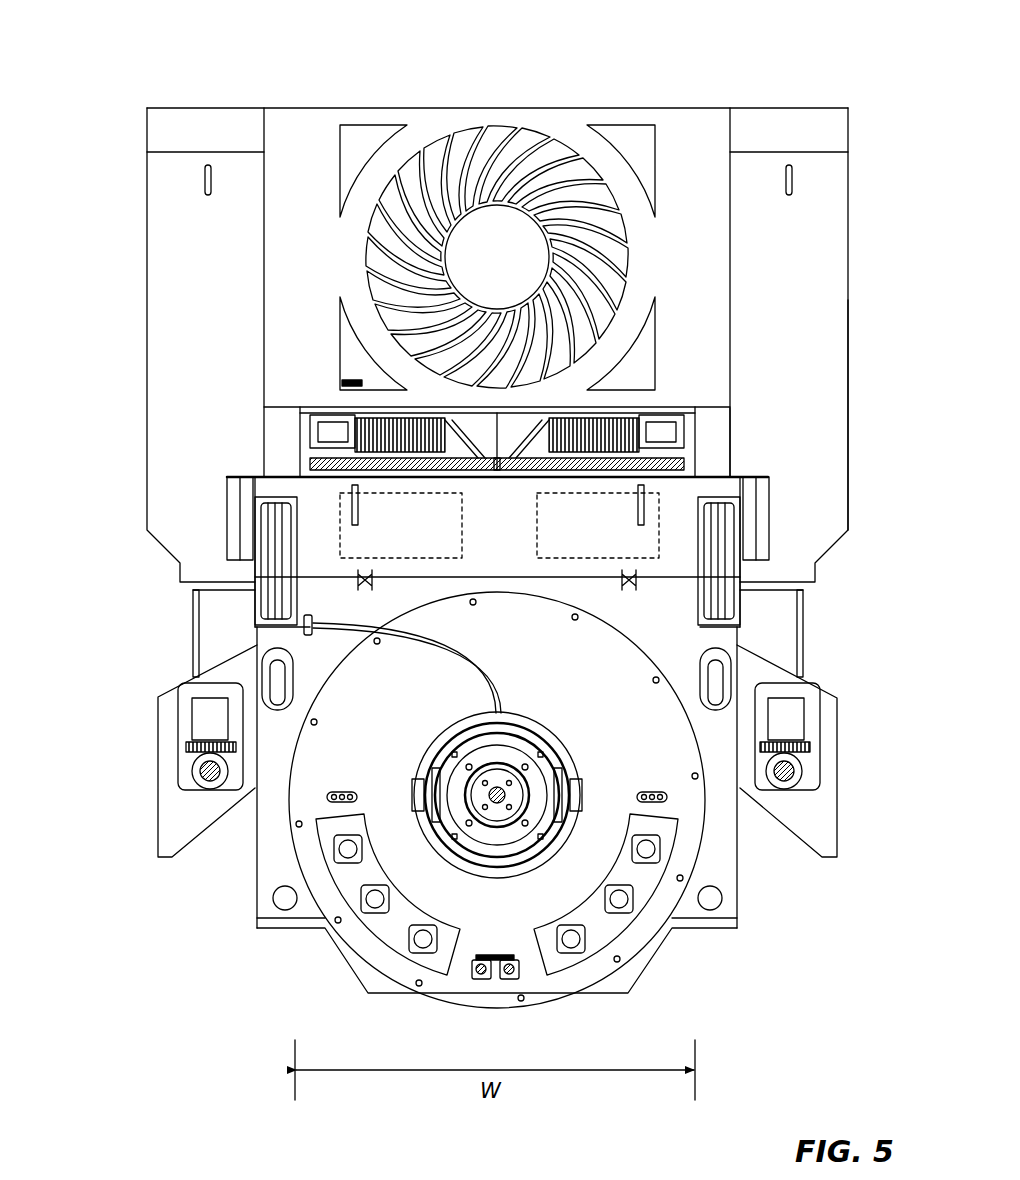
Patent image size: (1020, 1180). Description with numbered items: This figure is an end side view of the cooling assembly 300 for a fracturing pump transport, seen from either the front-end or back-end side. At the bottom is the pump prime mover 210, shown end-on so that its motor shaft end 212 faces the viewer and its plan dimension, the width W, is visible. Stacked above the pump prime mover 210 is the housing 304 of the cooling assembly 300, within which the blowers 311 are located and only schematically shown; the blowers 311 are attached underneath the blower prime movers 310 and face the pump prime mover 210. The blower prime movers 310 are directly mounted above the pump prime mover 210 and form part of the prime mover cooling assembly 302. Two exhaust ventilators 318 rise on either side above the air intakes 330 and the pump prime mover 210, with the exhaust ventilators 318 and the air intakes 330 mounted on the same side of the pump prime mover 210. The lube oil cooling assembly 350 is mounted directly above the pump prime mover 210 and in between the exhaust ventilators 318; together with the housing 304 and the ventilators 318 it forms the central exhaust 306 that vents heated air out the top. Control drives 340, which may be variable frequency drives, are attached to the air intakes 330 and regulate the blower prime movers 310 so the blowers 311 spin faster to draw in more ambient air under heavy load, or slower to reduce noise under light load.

The cooling assembly 300 is at (148, 48).
The central exhaust 306 is at (345, 107).
The lube oil cooling assembly 350 is at (676, 127).
The exhaust ventilators 318 is at (146, 298).
The prime mover cooling assembly 302 is at (836, 378).
The blower prime movers 310 is at (356, 437).
The blowers 311 is at (340, 520).
The housing 304 is at (800, 517).
The air intakes 330 is at (156, 719).
The control drives 340 is at (177, 761).
The pump prime mover 210 is at (644, 754).
The motor shaft ends 212 is at (490, 813).